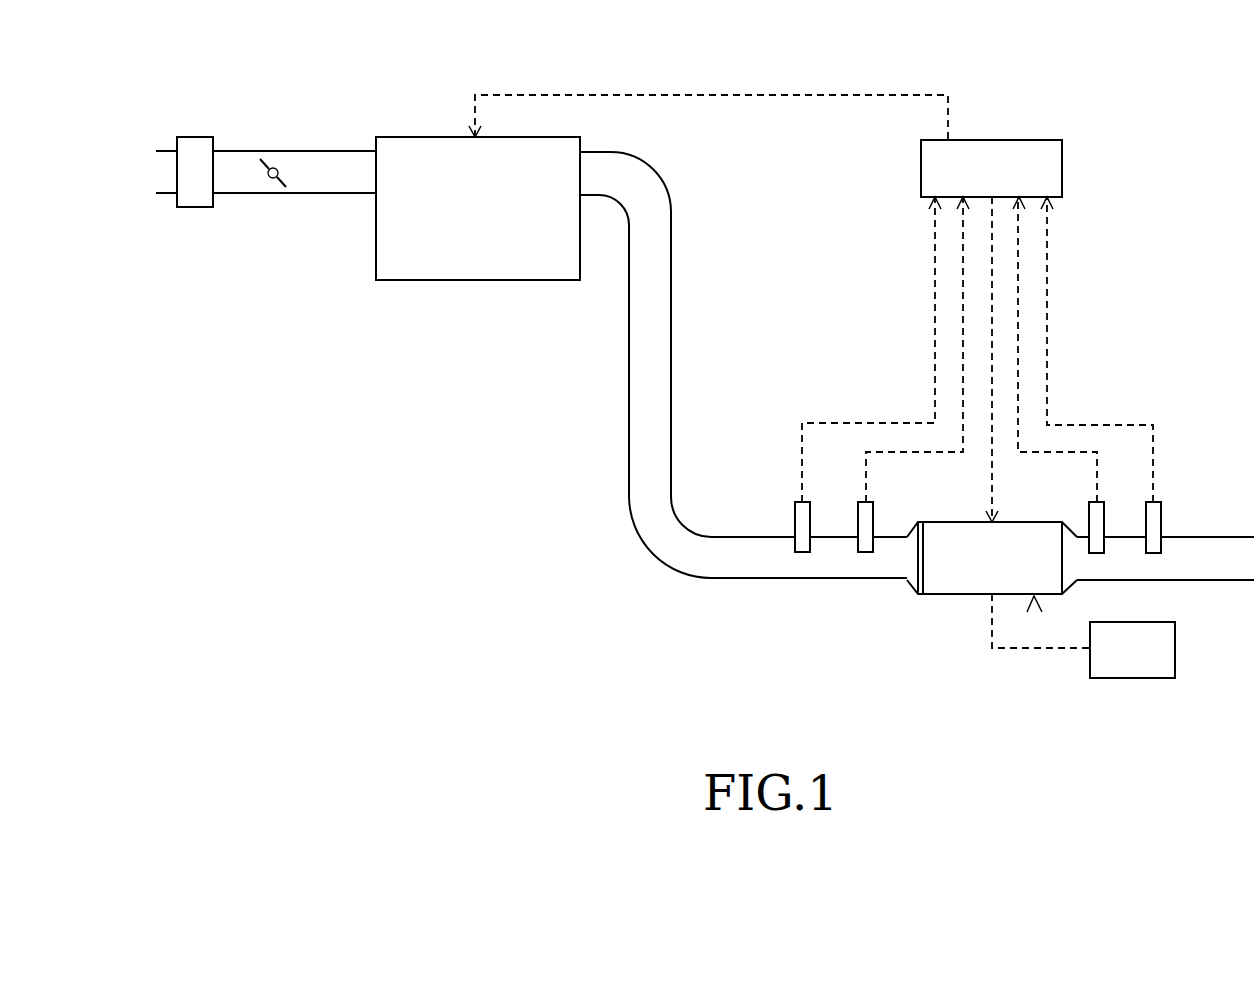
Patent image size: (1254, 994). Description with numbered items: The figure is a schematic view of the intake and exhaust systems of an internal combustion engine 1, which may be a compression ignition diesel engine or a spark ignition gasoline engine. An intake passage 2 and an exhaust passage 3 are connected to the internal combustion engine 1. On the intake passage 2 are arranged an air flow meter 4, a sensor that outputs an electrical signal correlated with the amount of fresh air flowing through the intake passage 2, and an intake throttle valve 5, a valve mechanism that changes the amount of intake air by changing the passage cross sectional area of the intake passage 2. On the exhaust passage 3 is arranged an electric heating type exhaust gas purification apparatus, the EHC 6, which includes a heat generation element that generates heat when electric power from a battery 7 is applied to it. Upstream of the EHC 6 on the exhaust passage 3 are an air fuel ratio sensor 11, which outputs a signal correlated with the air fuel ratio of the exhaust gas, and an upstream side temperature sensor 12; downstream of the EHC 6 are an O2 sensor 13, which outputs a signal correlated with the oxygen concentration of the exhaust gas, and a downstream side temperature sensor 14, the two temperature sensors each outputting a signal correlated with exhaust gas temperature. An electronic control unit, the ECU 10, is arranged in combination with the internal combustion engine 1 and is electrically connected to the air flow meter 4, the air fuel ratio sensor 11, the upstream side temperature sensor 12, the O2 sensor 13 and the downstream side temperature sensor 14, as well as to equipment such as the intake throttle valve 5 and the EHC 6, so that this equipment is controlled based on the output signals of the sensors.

The internal combustion engine 1 is at (478, 281).
The intake passage 2 is at (333, 195).
The exhaust passage 3 is at (671, 337).
The air flow meter 4 is at (198, 207).
The intake throttle valve 5 is at (269, 180).
The electric heating type exhaust gas purification apparatus (EHC) 6 is at (950, 594).
The battery 7 is at (1175, 652).
The electronic control unit (ECU) 10 is at (999, 140).
The air fuel ratio sensor 11 is at (795, 515).
The upstream side temperature sensor 12 is at (858, 515).
The O2 sensor 13 is at (1104, 515).
The downstream side temperature sensor 14 is at (1161, 515).